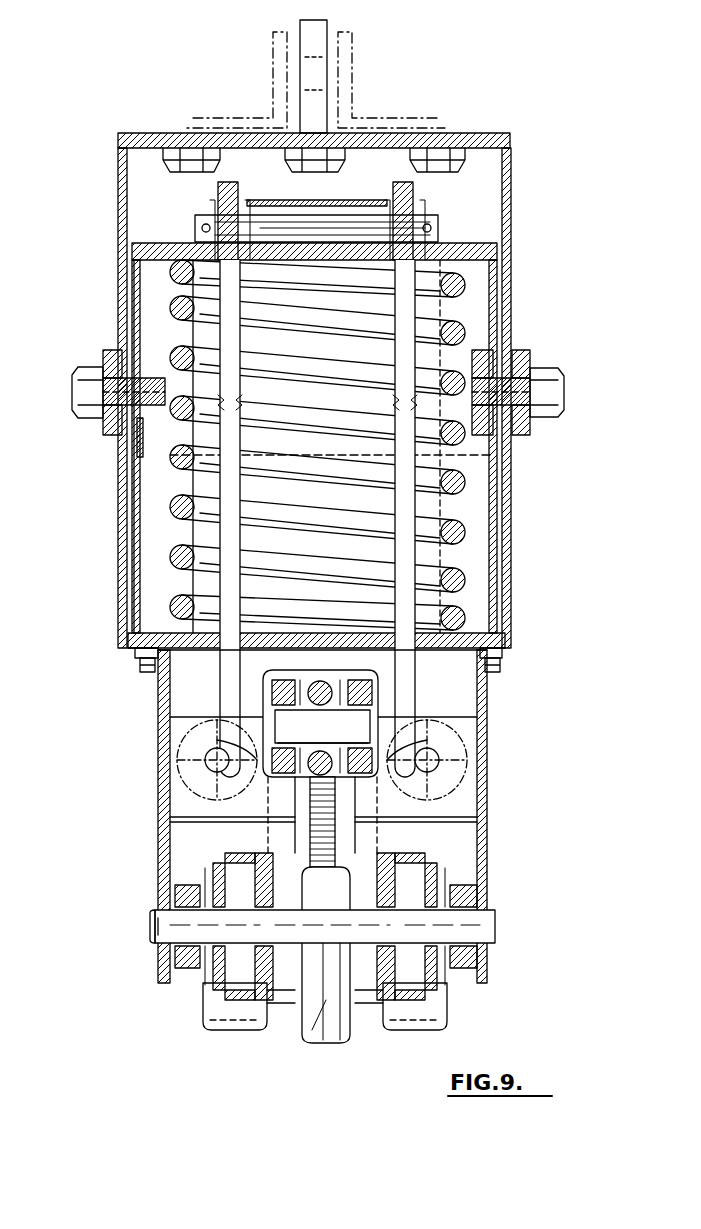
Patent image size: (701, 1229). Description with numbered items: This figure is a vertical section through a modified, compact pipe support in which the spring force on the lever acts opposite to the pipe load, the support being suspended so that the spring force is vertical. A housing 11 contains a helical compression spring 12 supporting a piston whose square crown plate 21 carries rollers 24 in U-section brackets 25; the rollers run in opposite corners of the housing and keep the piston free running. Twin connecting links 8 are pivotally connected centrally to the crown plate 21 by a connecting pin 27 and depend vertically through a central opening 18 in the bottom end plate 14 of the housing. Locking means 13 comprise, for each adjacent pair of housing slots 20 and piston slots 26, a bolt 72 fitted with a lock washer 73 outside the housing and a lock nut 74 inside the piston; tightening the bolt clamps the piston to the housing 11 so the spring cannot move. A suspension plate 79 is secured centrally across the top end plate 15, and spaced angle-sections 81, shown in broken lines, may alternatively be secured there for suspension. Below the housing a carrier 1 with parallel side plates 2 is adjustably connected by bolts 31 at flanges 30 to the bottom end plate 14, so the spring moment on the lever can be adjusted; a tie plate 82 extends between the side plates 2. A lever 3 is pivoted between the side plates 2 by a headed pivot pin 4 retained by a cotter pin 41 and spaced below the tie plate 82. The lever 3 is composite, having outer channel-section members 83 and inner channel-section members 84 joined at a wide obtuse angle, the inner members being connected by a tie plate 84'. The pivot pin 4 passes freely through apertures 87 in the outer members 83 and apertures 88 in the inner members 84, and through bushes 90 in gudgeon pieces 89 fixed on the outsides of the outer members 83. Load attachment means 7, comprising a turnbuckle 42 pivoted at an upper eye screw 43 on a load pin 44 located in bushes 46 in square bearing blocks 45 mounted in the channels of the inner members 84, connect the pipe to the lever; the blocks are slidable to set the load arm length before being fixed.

The carrier 1 is at (490, 755).
The side plates 2 is at (165, 700).
The lever 3 is at (250, 814).
The pivot pin 4 is at (470, 922).
The load attachment means 7 is at (310, 1015).
The connecting links 8 is at (405, 545).
The housing 11 is at (506, 542).
The helical compression spring 12 is at (482, 598).
The locking means 13 is at (93, 362).
The bottom end plate 14 is at (492, 656).
The top end plate 15 is at (478, 146).
The central opening 18 is at (265, 640).
The slots 20 is at (127, 452).
The crown plate 21 is at (458, 262).
The rollers 24 is at (332, 250).
The U-section brackets 25 is at (305, 222).
The slots 26 is at (141, 458).
The connecting pin 27 is at (335, 237).
The flanges 30 is at (135, 653).
The bolts 31 is at (140, 668).
The cotter pin 41 is at (152, 923).
The turnbuckle 42 is at (342, 1026).
The upper eye screw 43 is at (372, 703).
The load pin 44 is at (372, 740).
The bearing blocks 45 is at (380, 700).
The bushes 46 is at (322, 726).
The bolt 72 is at (82, 395).
The lock washer 73 is at (112, 420).
The lock nut 74 is at (160, 432).
The suspension plate 79 is at (312, 40).
The angle-sections 81 is at (340, 105).
The tie plate 82 is at (447, 816).
The outer channel-section members 83 is at (228, 860).
The inner channel-section members 84 is at (322, 700).
The tie plate 84' is at (217, 670).
The apertures 87 is at (180, 887).
The apertures 88 is at (375, 900).
The gudgeon pieces 89 is at (205, 990).
The bushes 90 is at (180, 964).